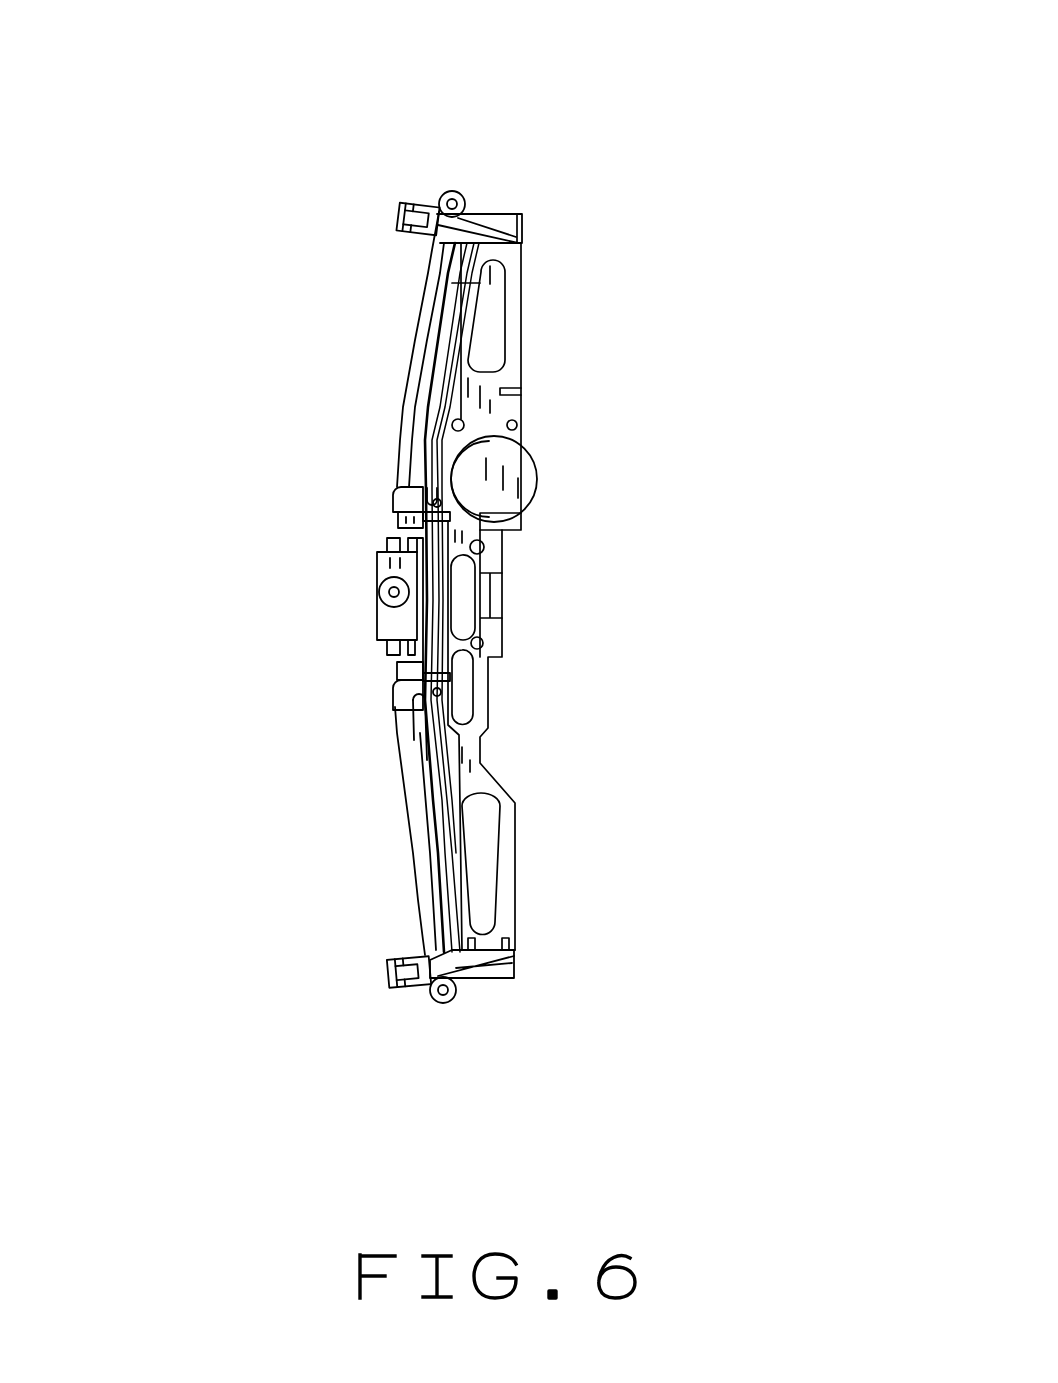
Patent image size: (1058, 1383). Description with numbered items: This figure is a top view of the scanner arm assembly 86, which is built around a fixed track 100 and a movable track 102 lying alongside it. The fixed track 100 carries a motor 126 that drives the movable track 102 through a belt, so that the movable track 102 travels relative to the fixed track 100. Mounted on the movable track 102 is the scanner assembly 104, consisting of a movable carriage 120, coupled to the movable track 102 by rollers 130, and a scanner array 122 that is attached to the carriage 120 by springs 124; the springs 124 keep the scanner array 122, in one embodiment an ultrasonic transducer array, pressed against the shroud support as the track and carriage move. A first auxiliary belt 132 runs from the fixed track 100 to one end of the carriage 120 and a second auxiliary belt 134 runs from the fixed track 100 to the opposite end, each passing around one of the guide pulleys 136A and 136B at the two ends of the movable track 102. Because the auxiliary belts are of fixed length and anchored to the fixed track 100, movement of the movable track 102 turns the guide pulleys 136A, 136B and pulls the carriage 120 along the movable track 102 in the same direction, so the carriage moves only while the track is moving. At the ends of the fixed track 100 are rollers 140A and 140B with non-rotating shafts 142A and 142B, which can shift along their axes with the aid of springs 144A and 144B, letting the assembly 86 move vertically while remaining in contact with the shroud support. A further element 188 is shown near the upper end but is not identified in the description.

The scanner arm assembly 86 is at (706, 312).
The fixed track 100 is at (512, 371).
The movable track 102 is at (427, 362).
The scanner assembly 104 is at (334, 621).
The movable carriage 120 is at (400, 515).
The scanner array 122 is at (375, 632).
The springs 124 is at (392, 542).
The motor 126 is at (533, 473).
The rollers 130 is at (418, 488).
The first auxiliary belt 132 is at (427, 284).
The second auxiliary belt 134 is at (402, 850).
The guide pulley 136A is at (452, 192).
The guide pulley 136B is at (443, 1003).
The roller 140A is at (412, 203).
The roller 140B is at (405, 990).
The shaft 142A is at (485, 230).
The shaft 142B is at (490, 968).
The spring 144A is at (504, 213).
The spring 144B is at (473, 932).
The upper slot 188 is at (486, 292).